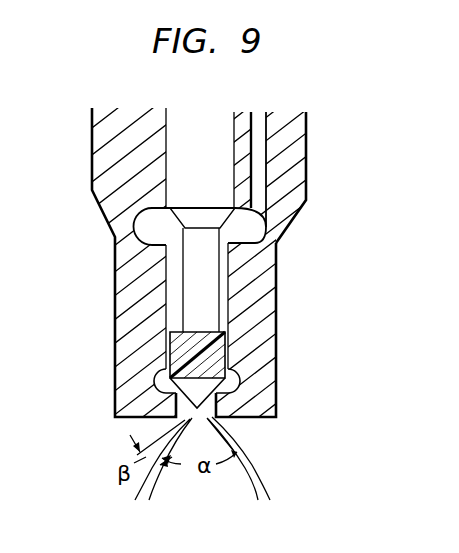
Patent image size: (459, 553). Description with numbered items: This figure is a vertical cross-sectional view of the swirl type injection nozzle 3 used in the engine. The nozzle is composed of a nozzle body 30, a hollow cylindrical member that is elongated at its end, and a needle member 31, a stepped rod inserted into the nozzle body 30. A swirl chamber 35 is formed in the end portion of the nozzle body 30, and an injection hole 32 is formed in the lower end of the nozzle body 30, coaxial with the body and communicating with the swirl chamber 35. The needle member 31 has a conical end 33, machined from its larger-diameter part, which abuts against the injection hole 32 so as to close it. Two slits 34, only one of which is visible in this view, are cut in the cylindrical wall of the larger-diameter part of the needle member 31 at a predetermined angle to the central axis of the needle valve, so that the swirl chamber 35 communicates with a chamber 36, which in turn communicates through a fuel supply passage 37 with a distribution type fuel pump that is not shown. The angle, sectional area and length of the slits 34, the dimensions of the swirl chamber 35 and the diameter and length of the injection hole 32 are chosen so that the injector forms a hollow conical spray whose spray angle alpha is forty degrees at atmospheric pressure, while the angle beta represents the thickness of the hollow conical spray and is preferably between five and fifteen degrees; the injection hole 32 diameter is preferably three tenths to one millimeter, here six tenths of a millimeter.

The swirl type injection nozzle 3 is at (262, 277).
The nozzle body 30 is at (262, 327).
The needle member 31 is at (185, 155).
The injection hole 32 is at (207, 407).
The conical end 33 is at (203, 368).
The slits 34 is at (197, 355).
The swirl chamber 35 is at (158, 381).
The chamber 36 is at (250, 223).
The fuel supply passage 37 is at (258, 153).